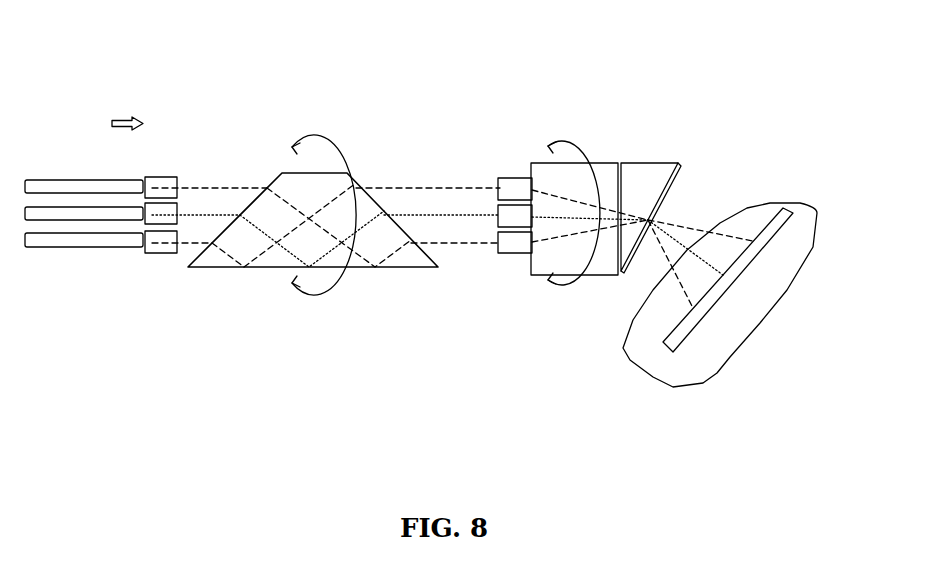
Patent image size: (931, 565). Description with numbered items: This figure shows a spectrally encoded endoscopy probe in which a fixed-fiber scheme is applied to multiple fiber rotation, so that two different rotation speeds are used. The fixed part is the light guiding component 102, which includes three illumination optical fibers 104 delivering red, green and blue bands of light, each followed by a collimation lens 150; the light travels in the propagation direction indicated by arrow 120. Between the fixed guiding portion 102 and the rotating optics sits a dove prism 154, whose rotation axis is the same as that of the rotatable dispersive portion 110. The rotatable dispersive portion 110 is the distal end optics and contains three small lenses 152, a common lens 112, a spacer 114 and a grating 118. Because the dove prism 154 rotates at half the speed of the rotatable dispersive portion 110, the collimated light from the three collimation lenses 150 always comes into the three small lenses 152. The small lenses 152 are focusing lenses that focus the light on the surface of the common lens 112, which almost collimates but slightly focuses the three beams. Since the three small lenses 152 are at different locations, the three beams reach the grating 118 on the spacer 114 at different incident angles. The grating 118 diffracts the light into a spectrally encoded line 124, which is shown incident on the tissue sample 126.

The light guiding component 102 is at (188, 68).
The optical fiber 104 is at (68, 181).
The rotatable dispersive portion 110 is at (705, 73).
The common lens 112 is at (589, 197).
The spacer 114 is at (649, 181).
The dispersive component 118 is at (664, 203).
The light propagation direction 120 is at (128, 109).
The spectrally encoded line 124 is at (635, 352).
The tissue sample 126 is at (723, 294).
The collimation lens 150 is at (170, 202).
The small lenses 152 is at (499, 202).
The dove prism 154 is at (313, 195).